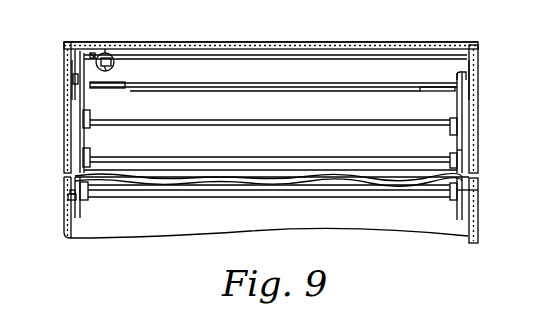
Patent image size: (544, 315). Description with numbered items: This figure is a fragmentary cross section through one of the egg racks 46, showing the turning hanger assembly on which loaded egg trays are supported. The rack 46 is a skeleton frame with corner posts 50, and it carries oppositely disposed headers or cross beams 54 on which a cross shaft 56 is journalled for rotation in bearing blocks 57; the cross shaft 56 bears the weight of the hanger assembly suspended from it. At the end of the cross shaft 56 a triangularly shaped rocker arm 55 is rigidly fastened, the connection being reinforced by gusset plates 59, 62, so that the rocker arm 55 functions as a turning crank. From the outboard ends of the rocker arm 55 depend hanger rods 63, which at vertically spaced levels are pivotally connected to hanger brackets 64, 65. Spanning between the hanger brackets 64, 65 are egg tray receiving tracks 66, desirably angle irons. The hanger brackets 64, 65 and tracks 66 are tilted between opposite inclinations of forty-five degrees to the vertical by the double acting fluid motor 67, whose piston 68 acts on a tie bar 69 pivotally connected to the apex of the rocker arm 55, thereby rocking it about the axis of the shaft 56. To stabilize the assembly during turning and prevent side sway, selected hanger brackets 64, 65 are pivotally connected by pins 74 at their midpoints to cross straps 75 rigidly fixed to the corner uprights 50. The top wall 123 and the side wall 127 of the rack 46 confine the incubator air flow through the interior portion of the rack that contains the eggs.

The rack 46 is at (62, 148).
The corner post 50 is at (70, 225).
The header 54 is at (72, 70).
The rocker arm 55 is at (82, 62).
The cross shaft 56 is at (287, 85).
The bearing block 57 is at (75, 78).
The gusset plate 59 is at (440, 88).
The gusset plate 62 is at (115, 83).
The hanger rod 63 is at (82, 140).
The hanger bracket 64 is at (90, 117).
The hanger bracket 65 is at (462, 125).
The egg tray receiving track 66 is at (307, 200).
The double acting fluid motor 67 is at (158, 72).
The piston 68 is at (105, 66).
The tie bar 69 is at (90, 51).
The pin 74 is at (470, 190).
The cross strap 75 is at (68, 195).
The top wall 123 is at (255, 43).
The side wall 127 is at (465, 222).